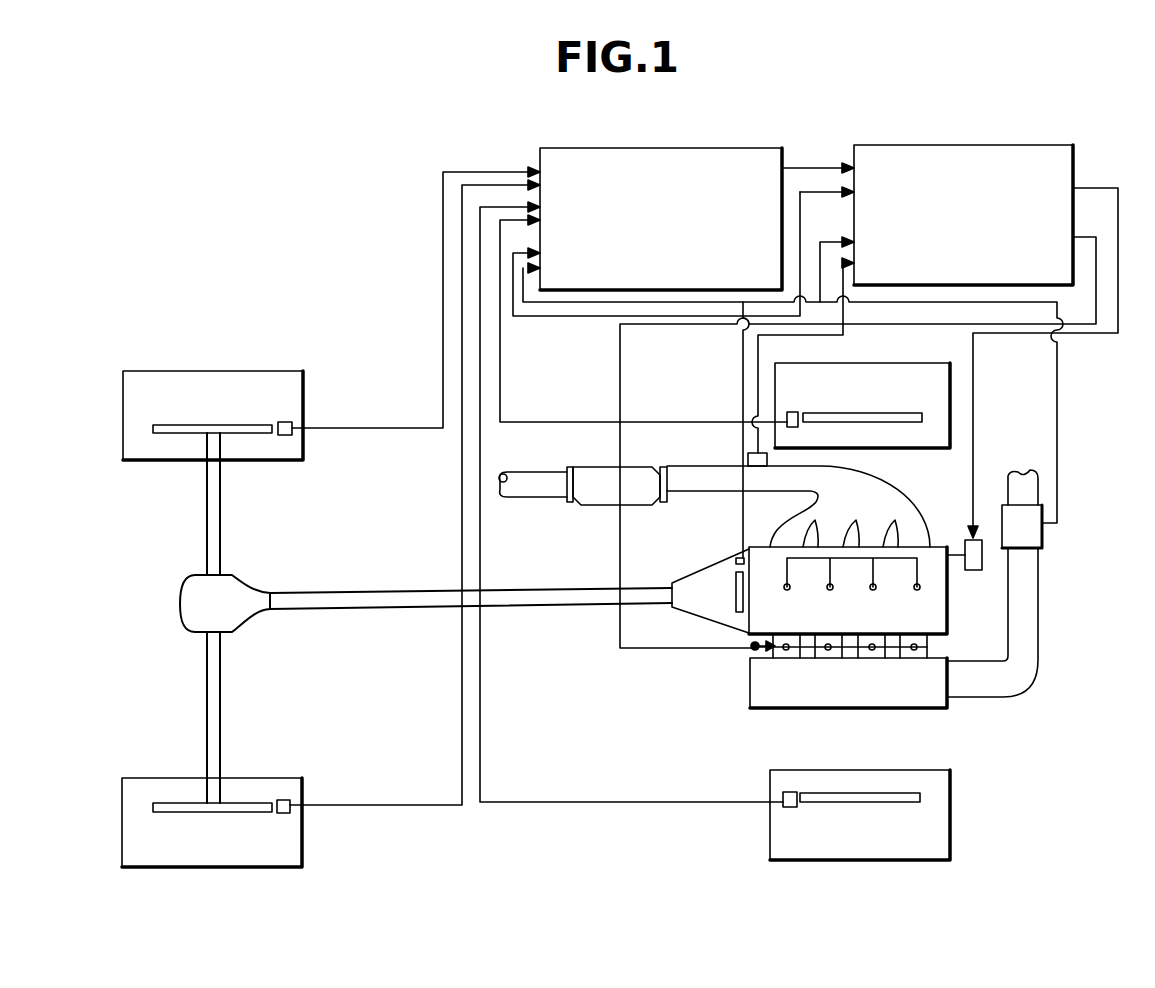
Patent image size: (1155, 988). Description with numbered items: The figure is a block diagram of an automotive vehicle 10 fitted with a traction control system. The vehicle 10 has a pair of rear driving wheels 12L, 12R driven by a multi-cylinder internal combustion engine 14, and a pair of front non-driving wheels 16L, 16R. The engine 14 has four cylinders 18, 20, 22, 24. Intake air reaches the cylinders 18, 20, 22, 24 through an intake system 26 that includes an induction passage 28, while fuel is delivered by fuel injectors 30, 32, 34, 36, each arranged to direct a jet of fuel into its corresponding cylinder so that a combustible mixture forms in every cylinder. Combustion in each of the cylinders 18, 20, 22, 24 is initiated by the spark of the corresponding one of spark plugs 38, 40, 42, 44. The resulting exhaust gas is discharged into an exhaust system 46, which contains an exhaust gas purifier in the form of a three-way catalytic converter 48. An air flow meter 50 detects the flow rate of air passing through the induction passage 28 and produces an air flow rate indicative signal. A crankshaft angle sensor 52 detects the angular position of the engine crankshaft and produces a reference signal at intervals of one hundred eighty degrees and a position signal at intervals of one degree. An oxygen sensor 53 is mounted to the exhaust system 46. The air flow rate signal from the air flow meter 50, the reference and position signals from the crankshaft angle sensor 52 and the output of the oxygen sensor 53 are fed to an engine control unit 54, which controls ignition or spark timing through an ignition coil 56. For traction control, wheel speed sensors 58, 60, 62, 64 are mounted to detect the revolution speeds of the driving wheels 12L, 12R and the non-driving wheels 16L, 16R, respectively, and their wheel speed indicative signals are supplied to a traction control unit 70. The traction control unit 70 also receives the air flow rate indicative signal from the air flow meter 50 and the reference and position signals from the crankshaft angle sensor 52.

The automotive vehicle 10 is at (368, 270).
The rear driving wheel 12L is at (245, 370).
The rear driving wheel 12R is at (232, 867).
The multi-cylinder internal combustion engine 14 is at (752, 650).
The front non-driving wheel 16L is at (915, 398).
The front non-driving wheel 16R is at (950, 813).
The cylinder 18 is at (933, 625).
The cylinder 20 is at (897, 625).
The cylinder 22 is at (852, 625).
The cylinder 24 is at (807, 625).
The intake system 26 is at (768, 709).
The induction passage 28 is at (1039, 619).
The fuel injector 30 is at (914, 650).
The fuel injector 32 is at (872, 650).
The fuel injector 34 is at (828, 650).
The fuel injector 36 is at (786, 650).
The spark plug 38 is at (920, 585).
The spark plug 40 is at (894, 584).
The spark plug 42 is at (851, 584).
The spark plug 44 is at (808, 584).
The exhaust system 46 is at (877, 473).
The three-way catalytic converter 48 is at (595, 507).
The air flow meter 50 is at (1043, 535).
The crankshaft angle sensor 52 is at (737, 558).
The oxygen sensor 53 is at (747, 453).
The engine control unit 54 is at (1000, 147).
The ignition coil 56 is at (973, 571).
The wheel speed sensor 58 is at (291, 436).
The wheel speed sensor 60 is at (290, 814).
The wheel speed sensor 62 is at (793, 412).
The wheel speed sensor 64 is at (790, 809).
The traction control unit 70 is at (537, 158).